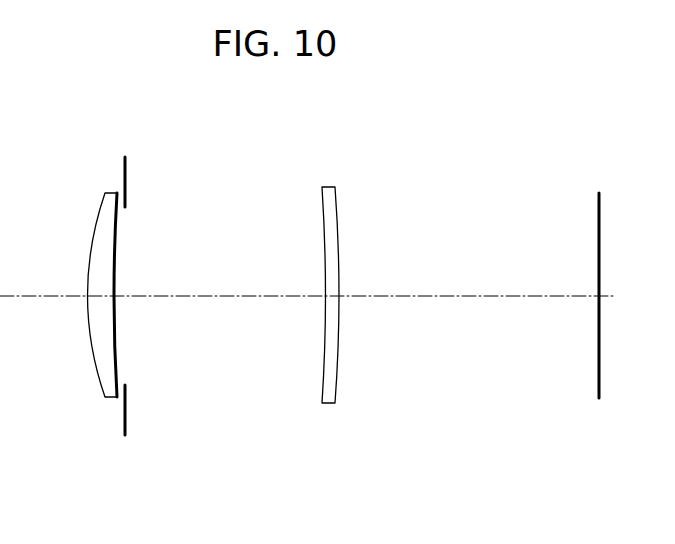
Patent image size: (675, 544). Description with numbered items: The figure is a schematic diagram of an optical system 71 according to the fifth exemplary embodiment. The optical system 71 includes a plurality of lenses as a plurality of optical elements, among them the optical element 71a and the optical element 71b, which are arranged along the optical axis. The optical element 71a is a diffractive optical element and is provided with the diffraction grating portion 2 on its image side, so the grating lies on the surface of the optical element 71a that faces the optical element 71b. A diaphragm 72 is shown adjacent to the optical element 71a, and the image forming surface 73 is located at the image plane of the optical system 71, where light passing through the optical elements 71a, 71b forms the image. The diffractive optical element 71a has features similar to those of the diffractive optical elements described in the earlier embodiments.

The optical system 71 is at (195, 345).
The optical element 71a is at (97, 234).
The optical element 71b is at (322, 203).
The diffraction grating portion 2 is at (116, 358).
The diaphragm 72 is at (127, 180).
The image forming surface 73 is at (601, 220).